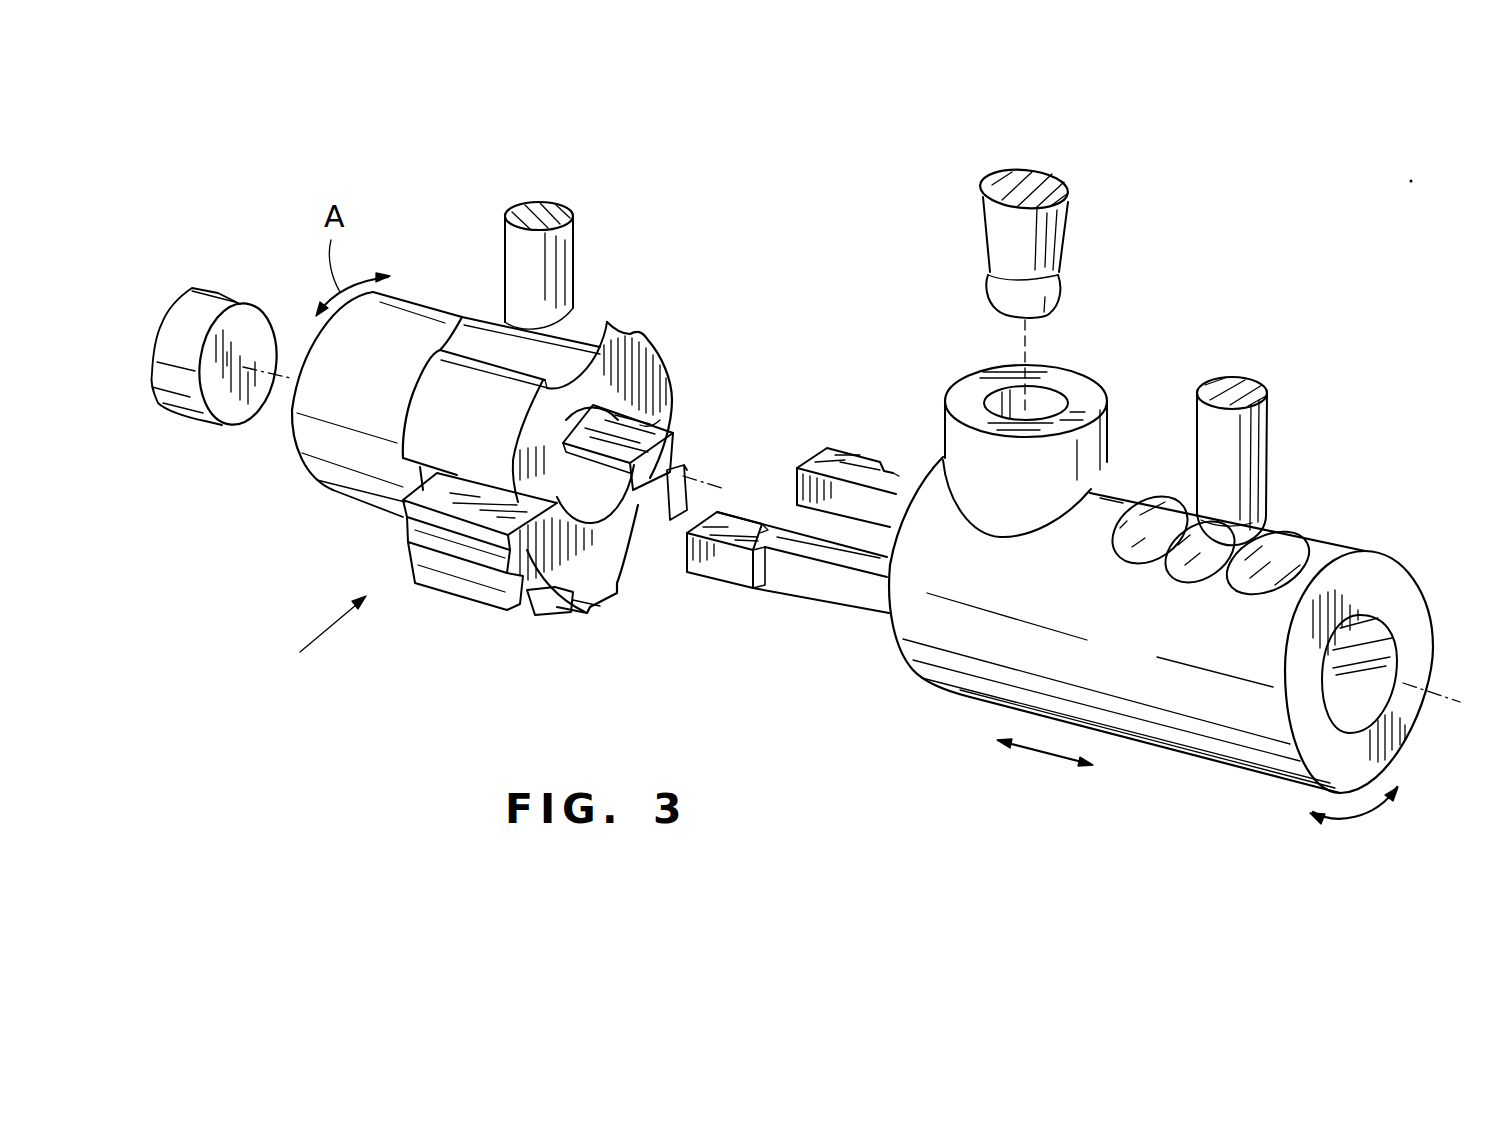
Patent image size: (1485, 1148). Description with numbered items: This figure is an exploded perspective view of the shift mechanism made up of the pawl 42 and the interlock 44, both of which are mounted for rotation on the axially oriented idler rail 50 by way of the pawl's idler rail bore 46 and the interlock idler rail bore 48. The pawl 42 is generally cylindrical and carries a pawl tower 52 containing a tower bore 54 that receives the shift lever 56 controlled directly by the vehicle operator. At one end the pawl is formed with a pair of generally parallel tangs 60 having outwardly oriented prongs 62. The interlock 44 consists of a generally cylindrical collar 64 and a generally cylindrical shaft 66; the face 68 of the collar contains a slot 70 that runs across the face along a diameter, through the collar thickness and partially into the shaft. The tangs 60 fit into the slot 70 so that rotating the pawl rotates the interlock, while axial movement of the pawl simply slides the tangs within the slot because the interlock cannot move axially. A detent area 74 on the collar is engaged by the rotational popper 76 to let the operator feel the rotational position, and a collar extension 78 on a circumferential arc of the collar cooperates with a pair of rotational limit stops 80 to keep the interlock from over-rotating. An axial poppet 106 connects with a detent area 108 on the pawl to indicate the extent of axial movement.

The pawl 42 is at (946, 704).
The interlock 44 is at (314, 638).
The idler rail bore 46 is at (1375, 637).
The interlock idler rail bore 48 is at (600, 500).
The idler rail 50 is at (222, 305).
The pawl tower 52 is at (967, 382).
The tower bore 54 is at (1050, 402).
The shift lever 56 is at (1053, 215).
The tangs 60 is at (812, 590).
The prongs 62 is at (725, 575).
The collar 64 is at (676, 342).
The shaft 66 is at (335, 483).
The face 68 is at (548, 608).
The slot 70 is at (663, 415).
The detent area 74 is at (623, 333).
The rotational popper 76 is at (566, 247).
The collar extension 78 is at (588, 612).
The rotational limit stops 80 is at (691, 474).
The axial poppet 106 is at (1265, 420).
The detent area 108 is at (1243, 587).